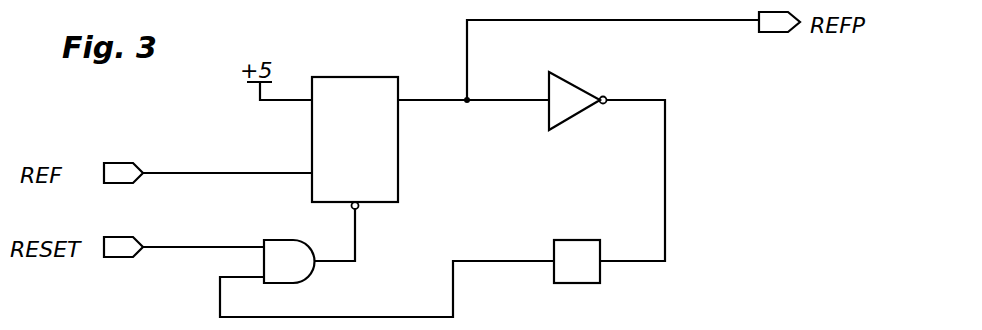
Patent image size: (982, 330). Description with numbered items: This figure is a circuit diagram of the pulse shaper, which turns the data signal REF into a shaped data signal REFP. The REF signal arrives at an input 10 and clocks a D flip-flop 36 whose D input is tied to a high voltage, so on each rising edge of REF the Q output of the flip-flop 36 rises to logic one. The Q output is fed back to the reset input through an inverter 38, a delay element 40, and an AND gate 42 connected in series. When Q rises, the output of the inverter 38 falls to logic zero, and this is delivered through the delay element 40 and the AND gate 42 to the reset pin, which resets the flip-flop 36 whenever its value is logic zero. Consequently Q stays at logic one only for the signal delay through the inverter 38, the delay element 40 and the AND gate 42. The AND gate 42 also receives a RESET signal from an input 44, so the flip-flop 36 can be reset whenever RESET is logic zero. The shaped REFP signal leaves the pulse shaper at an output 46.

The REF input signal terminal 10 is at (125, 163).
The D flip-flop 36 is at (387, 140).
The inverter 38 is at (573, 88).
The delay element 40 is at (584, 278).
The AND gate 42 is at (290, 277).
The input 44 is at (120, 257).
The output 46 is at (778, 31).